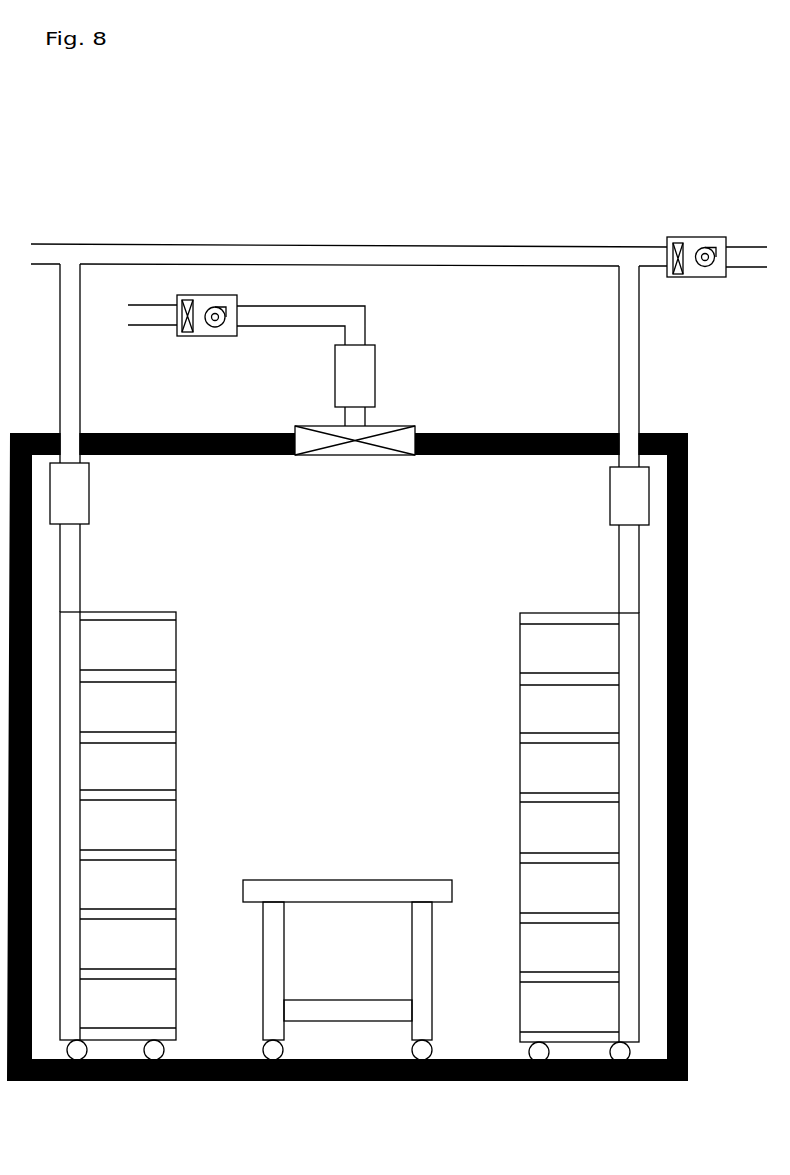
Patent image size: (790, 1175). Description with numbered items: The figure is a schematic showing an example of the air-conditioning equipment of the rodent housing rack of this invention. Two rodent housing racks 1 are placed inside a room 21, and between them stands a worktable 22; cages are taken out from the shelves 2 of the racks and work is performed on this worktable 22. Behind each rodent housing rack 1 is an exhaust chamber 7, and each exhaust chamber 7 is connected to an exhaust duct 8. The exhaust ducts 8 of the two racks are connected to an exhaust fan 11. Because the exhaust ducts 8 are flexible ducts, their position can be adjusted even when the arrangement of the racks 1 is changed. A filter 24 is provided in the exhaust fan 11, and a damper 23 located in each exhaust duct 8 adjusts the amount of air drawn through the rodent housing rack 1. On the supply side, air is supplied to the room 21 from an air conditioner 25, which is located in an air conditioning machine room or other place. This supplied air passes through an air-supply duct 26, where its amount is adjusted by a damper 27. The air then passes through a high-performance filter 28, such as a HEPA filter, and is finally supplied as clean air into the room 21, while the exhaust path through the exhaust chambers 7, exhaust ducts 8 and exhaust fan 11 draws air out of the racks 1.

The rodent housing rack 1 is at (197, 597).
The shelf 2 is at (530, 645).
The exhaust chamber 7 is at (633, 768).
The exhaust duct 8 is at (630, 559).
The exhaust fan 11 is at (688, 243).
The room 21 is at (340, 690).
The worktable 22 is at (349, 890).
The damper 23 is at (625, 497).
The filter 24 is at (675, 277).
The air conditioner 25 is at (204, 337).
The air-supply duct 26 is at (356, 323).
The damper 27 is at (365, 378).
The high-performance filter 28 is at (355, 452).